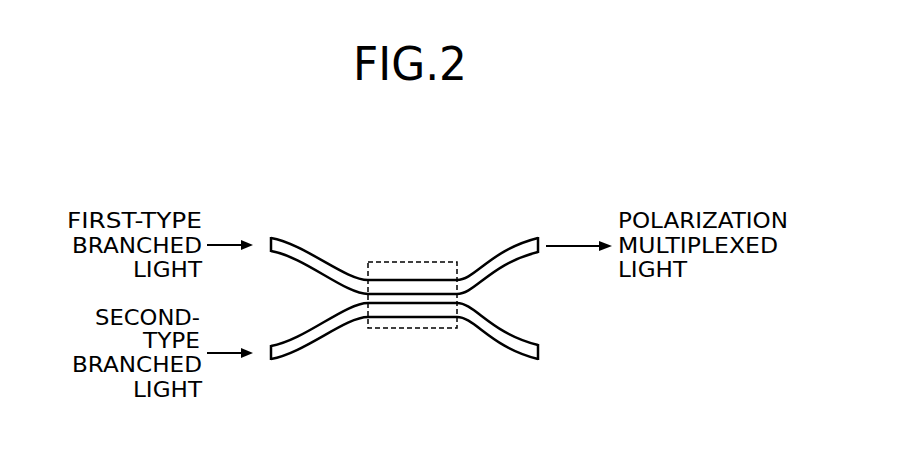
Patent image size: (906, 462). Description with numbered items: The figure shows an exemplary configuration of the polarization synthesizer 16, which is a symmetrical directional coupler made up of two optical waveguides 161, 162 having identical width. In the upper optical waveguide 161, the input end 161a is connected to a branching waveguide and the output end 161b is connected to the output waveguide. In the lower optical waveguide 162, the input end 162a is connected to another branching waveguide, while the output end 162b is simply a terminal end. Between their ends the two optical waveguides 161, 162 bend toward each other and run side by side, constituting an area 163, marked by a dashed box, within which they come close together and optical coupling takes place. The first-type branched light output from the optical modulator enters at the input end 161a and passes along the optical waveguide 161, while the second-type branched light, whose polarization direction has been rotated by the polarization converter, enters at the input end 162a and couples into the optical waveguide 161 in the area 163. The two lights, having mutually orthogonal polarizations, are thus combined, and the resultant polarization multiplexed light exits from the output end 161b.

The polarization synthesizer 16 is at (430, 186).
The optical waveguide 161 is at (297, 239).
The input end 161a is at (271, 239).
The output end 161b is at (546, 238).
The optical waveguide 162 is at (297, 358).
The input end 162a is at (271, 358).
The output end 162b is at (546, 359).
The area 163 is at (400, 329).